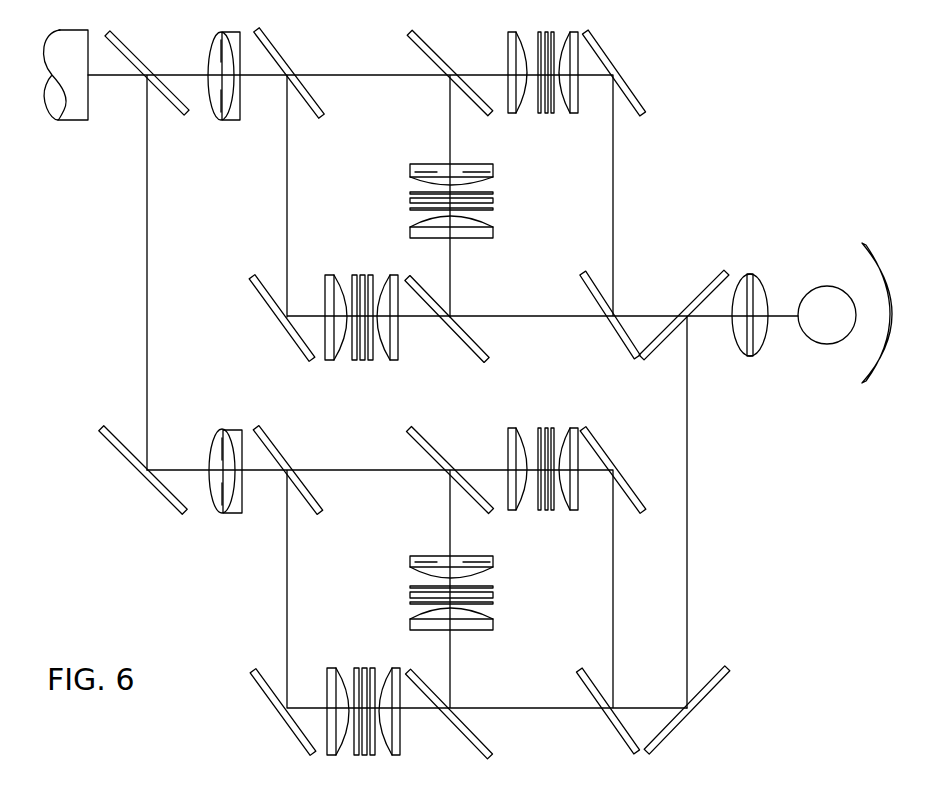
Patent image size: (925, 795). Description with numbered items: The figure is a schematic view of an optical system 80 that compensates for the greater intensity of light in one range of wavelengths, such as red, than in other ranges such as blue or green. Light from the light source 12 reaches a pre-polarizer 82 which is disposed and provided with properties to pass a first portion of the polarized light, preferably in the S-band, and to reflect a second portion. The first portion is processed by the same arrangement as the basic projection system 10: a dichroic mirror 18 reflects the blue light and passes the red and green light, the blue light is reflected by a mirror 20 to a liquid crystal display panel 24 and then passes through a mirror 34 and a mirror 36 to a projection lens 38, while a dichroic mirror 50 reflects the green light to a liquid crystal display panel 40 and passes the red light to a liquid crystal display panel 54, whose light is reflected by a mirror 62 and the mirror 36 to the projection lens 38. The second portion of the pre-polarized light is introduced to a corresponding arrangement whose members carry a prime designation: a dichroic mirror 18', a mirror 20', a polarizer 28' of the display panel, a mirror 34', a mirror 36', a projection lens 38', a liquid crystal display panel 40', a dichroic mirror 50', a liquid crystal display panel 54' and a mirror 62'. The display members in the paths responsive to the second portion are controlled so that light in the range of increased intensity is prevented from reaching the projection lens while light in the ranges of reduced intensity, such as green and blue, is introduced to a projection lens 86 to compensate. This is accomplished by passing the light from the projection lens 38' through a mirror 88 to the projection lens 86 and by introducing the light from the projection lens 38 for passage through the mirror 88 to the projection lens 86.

The system 10 is at (638, 192).
The light source 12 is at (813, 286).
The dichroic mirror 18 is at (608, 327).
The mirror 20 is at (640, 92).
The liquid crystal display panel 24 is at (549, 118).
The polarizer 28' is at (553, 504).
The mirror 34 is at (459, 94).
The mirror 34' is at (450, 455).
The mirror 36 is at (306, 96).
The mirror 36' is at (300, 456).
The projection lens 38 is at (241, 97).
The projection lens 38' is at (208, 510).
The liquid crystal display panel 40 is at (499, 201).
The liquid crystal display panel 40' is at (497, 606).
The dichroic mirror 50 is at (478, 319).
The dichroic mirror 50' is at (474, 714).
The liquid crystal display panel 54 is at (351, 283).
The liquid crystal display panel 54' is at (352, 671).
The mirror 62 is at (256, 318).
The mirror 62' is at (262, 712).
The optical system 80 is at (706, 535).
The pre-polarizer 82 is at (698, 290).
The projection lens 86 is at (74, 121).
The mirror 88 is at (170, 102).
The dichroic mirror 18' is at (600, 713).
The mirror 20' is at (621, 455).